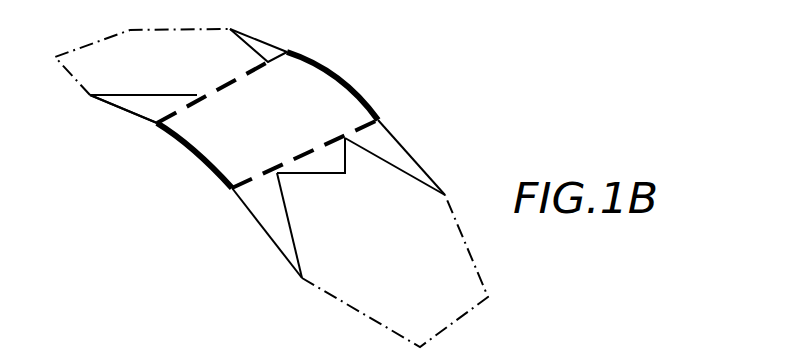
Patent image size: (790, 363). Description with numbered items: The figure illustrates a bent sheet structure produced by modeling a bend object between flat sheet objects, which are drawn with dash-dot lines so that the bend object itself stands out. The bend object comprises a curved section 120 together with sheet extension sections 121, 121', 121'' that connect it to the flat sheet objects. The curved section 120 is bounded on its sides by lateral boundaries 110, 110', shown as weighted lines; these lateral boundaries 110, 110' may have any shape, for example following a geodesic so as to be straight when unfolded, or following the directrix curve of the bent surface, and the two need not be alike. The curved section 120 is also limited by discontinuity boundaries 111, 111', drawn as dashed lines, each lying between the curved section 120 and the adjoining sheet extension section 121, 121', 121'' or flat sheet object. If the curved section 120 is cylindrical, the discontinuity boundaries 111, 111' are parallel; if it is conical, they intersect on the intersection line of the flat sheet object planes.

The lateral boundary 110 is at (352, 82).
The lateral boundary 110' is at (241, 157).
The discontinuity boundary 111 is at (212, 81).
The discontinuity boundary 111' is at (305, 143).
The curved section 120 is at (200, 122).
The sheet extension section 121 is at (424, 154).
The sheet extension section 121' is at (289, 32).
The sheet extension section 121'' is at (110, 121).